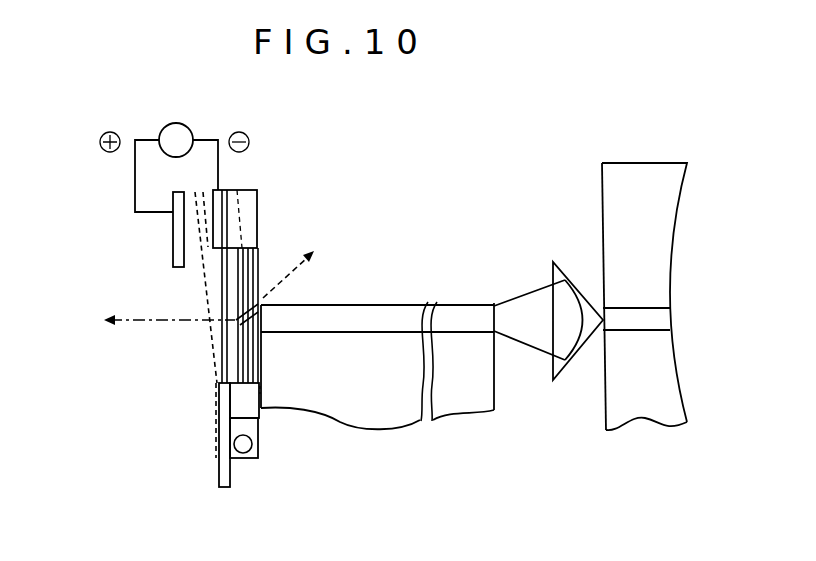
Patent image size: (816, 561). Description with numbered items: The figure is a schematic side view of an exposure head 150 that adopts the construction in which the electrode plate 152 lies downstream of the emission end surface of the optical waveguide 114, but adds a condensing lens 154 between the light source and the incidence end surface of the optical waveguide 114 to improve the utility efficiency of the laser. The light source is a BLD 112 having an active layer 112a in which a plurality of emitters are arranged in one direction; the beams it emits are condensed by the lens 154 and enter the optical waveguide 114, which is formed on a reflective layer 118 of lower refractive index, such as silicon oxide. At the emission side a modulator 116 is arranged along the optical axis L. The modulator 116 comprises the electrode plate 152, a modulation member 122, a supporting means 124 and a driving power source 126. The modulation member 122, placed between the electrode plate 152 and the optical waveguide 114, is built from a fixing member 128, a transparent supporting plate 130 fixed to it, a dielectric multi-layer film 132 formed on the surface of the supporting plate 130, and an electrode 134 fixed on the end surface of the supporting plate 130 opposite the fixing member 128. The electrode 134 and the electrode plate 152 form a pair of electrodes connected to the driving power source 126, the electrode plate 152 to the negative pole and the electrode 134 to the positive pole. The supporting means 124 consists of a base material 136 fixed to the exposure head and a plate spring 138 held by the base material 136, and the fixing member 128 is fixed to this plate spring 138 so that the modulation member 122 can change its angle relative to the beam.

The modulator 116 is at (99, 181).
The driving power source 126 is at (177, 124).
The electrode plate 152 is at (173, 240).
The electrode 134 is at (257, 203).
The modulation member 122 is at (214, 292).
The supporting plate 130 is at (223, 358).
The dielectric multi-layer film 132 is at (257, 267).
The optical axis L is at (110, 324).
The supporting means 124 is at (197, 491).
The plate spring 138 is at (221, 433).
The fixing member 128 is at (260, 402).
The base material 136 is at (255, 460).
The optical waveguide 114 is at (458, 315).
The reflective layer 118 is at (467, 400).
The lens 154 is at (554, 262).
The exposure head 150 is at (631, 142).
The BLD 112 is at (672, 242).
The active layer 112a is at (663, 320).